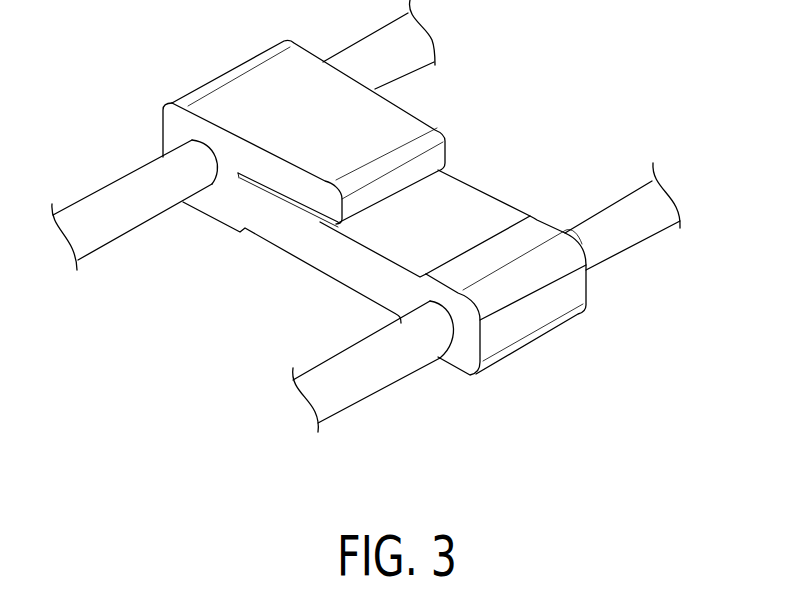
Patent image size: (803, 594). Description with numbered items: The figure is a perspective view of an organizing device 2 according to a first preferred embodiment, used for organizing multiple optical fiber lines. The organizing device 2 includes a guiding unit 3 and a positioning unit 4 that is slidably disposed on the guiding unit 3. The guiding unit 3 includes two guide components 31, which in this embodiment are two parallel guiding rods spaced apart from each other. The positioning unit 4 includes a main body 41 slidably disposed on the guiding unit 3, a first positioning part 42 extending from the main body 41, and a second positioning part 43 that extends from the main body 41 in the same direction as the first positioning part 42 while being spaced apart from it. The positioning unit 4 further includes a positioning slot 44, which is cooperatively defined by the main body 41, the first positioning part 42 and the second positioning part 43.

The organizing device 2 is at (366, 241).
The guiding unit 3 is at (366, 241).
The guide components 31 is at (118, 228).
The positioning unit 4 is at (366, 204).
The main body 41 is at (162, 127).
The first positioning part 42 is at (283, 280).
The second positioning part 43 is at (446, 98).
The positioning slot 44 is at (286, 205).